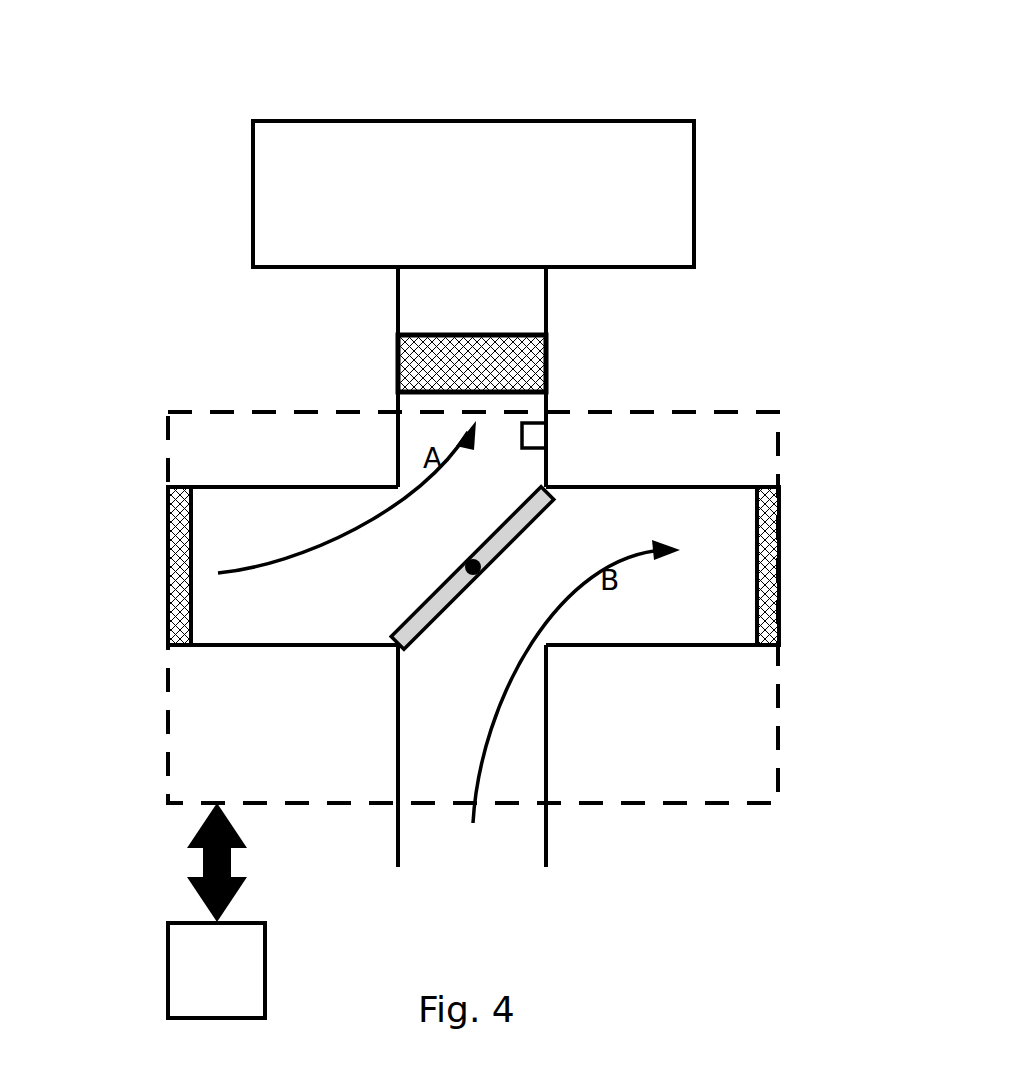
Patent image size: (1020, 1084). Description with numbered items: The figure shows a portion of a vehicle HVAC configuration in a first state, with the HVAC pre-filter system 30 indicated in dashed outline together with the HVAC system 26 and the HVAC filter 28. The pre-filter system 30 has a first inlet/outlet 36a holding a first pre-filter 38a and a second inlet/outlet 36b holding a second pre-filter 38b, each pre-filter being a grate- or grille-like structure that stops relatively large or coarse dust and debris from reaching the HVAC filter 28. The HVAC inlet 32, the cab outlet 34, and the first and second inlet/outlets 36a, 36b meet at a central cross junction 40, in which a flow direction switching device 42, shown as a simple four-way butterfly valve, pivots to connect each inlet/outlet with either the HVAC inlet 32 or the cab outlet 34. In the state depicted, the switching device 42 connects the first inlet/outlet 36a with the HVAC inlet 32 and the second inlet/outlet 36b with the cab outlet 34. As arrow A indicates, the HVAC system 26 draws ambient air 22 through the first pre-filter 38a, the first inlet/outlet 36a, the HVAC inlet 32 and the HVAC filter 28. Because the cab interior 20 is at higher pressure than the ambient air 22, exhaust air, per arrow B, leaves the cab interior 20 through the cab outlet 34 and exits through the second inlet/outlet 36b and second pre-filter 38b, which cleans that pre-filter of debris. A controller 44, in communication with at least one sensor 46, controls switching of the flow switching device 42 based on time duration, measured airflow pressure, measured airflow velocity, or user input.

The cab interior 20 is at (476, 905).
The ambient air 22 is at (474, 565).
The HVAC system 26 is at (543, 168).
The HVAC filter 28 is at (398, 338).
The HVAC pre-filter system 30 is at (660, 805).
The HVAC inlet 32 is at (398, 448).
The cab outlet 34 is at (548, 830).
The first inlet/outlet 36a is at (262, 645).
The second inlet/outlet 36b is at (637, 648).
The first pre-filter 38a is at (168, 527).
The second pre-filter 38b is at (779, 528).
The central cross junction 40 is at (380, 683).
The flow direction switching device 42 is at (550, 512).
The controller 44 is at (265, 962).
The sensor 46 is at (548, 440).